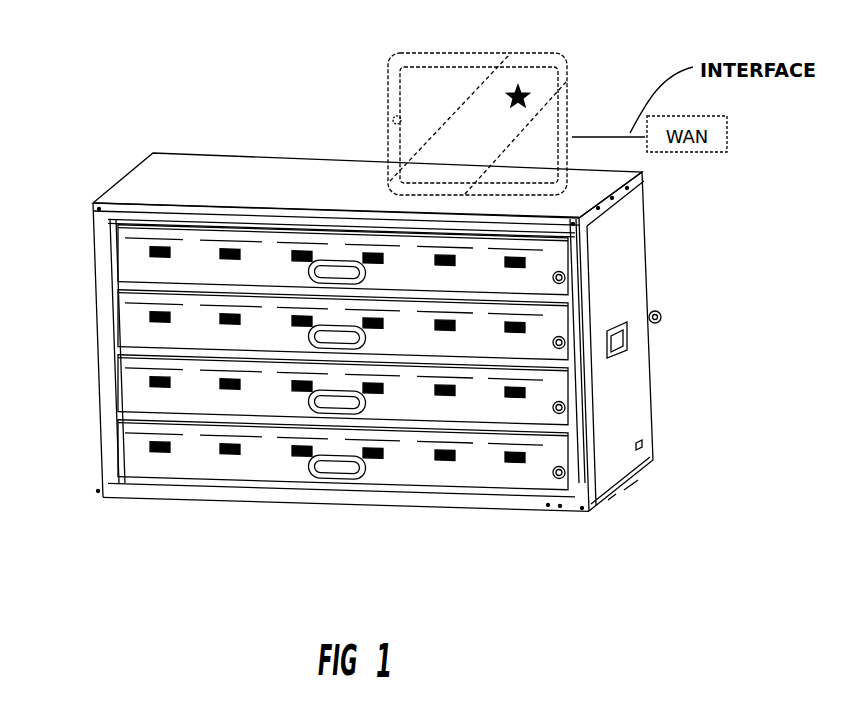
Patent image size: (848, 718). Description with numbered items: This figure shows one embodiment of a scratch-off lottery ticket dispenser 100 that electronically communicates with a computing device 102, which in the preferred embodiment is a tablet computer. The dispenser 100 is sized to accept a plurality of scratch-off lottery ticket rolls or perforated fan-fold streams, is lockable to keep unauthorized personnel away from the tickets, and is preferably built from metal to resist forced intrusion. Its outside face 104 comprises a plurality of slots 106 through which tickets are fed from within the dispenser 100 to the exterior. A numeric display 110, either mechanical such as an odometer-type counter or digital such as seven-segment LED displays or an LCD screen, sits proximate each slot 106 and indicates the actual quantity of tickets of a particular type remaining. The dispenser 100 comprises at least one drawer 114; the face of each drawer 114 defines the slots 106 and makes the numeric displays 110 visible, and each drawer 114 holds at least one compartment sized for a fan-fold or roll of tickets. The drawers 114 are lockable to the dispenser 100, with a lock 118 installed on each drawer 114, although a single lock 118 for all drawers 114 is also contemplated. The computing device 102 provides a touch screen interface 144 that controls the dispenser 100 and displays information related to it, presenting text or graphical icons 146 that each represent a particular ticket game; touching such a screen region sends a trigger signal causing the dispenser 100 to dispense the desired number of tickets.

The scratch-off lottery ticket dispenser 100 is at (346, 313).
The computing device 102 is at (472, 113).
The touch screen interface 144 is at (430, 143).
The graphical icon 146 is at (527, 102).
The slot 106 is at (112, 237).
The outside face 104 is at (127, 352).
The drawer 114 is at (132, 402).
The numeric display 110 is at (157, 450).
The lock 118 is at (573, 503).